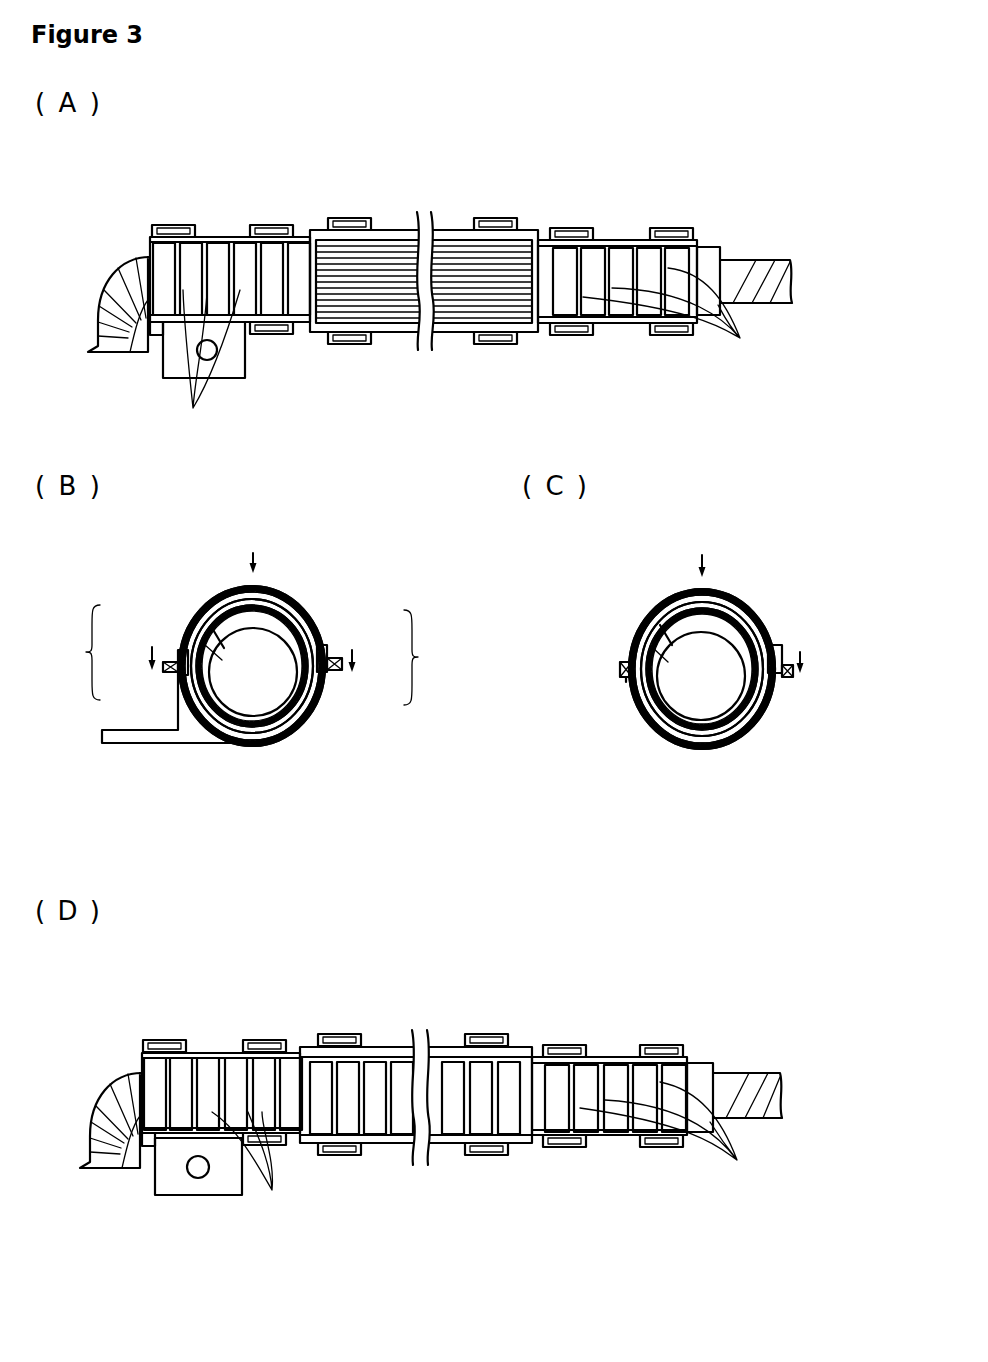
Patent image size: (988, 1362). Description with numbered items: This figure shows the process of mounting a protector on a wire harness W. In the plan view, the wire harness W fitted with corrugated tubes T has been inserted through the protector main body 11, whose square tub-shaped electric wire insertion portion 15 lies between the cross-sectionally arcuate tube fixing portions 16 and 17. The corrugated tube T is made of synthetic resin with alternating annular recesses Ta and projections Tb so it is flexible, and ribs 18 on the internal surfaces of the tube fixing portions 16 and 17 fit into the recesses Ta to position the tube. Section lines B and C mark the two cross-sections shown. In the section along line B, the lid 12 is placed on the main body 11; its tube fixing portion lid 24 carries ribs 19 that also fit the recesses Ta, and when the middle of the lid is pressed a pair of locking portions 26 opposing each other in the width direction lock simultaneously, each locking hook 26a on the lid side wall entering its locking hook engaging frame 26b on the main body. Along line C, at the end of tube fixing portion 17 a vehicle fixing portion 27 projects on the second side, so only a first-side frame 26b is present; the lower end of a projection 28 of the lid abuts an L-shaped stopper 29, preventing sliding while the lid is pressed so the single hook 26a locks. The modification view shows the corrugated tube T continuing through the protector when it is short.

In FIG. 3A, the protector main body 11 is at (390, 217).
In FIG. 3B, the protector main body 11 is at (338, 716).
In FIG. 3C, the protector main body 11 is at (655, 745).
In FIG. 3D, the protector main body 11 is at (357, 1030).
In FIG. 3B, the lid 12 is at (230, 578).
In FIG. 3C, the lid 12 is at (668, 578).
In FIG. 3A, the electric wire insertion portion 15 is at (447, 230).
In FIG. 3D, the electric wire insertion portion 15 is at (447, 1047).
In FIG. 3A, the tube fixing portion 16 is at (600, 246).
In FIG. 3D, the tube fixing portion 16 is at (590, 1063).
In FIG. 3A, the tube fixing portion 17 is at (205, 240).
In FIG. 3B, the tube fixing portion 17 is at (300, 738).
In FIG. 3C, the tube fixing portion 17 is at (724, 745).
In FIG. 3D, the tube fixing portion 17 is at (205, 1055).
In FIG. 3A, the rib 18 is at (152, 226).
In FIG. 3D, the rib 18 is at (165, 1058).
In FIG. 3B, the rib 19 is at (262, 598).
In FIG. 3C, the rib 19 is at (716, 600).
In FIG. 3B, the tube fixing portion lid 24 is at (290, 600).
In FIG. 3C, the tube fixing portion lid 24 is at (744, 604).
In FIG. 3B, the locking portion 26 is at (252, 655).
In FIG. 3B, the locking hook 26a is at (177, 655).
In FIG. 3C, the locking hook 26a is at (783, 653).
In FIG. 3B, the locking hook engaging frame 26b is at (165, 669).
In FIG. 3C, the locking hook engaging frame 26b is at (795, 673).
In FIG. 3B, the vehicle fixing portion 27 is at (145, 745).
In FIG. 3C, the projection 28 is at (620, 668).
In FIG. 3C, the stopper 29 is at (626, 679).
In FIG. 3A, the corrugated tube T is at (710, 250).
In FIG. 3B, the corrugated tube T is at (212, 628).
In FIG. 3C, the corrugated tube T is at (660, 625).
In FIG. 3D, the corrugated tube T is at (710, 1065).
In FIG. 3A, the annular recess Ta is at (477, 354).
In FIG. 3B, the annular recess Ta is at (210, 636).
In FIG. 3C, the annular recess Ta is at (653, 648).
In FIG. 3D, the annular recess Ta is at (491, 1153).
In FIG. 3A, the annular projection Tb is at (243, 252).
In FIG. 3D, the annular projection Tb is at (270, 1068).
In FIG. 3A, the wire harness W is at (768, 262).
In FIG. 3B, the wire harness W is at (260, 703).
In FIG. 3C, the wire harness W is at (728, 700).
In FIG. 3D, the wire harness W is at (772, 1075).
In FIG. 3A, the section line B is at (257, 410).
In FIG. 3A, the section line C is at (140, 400).